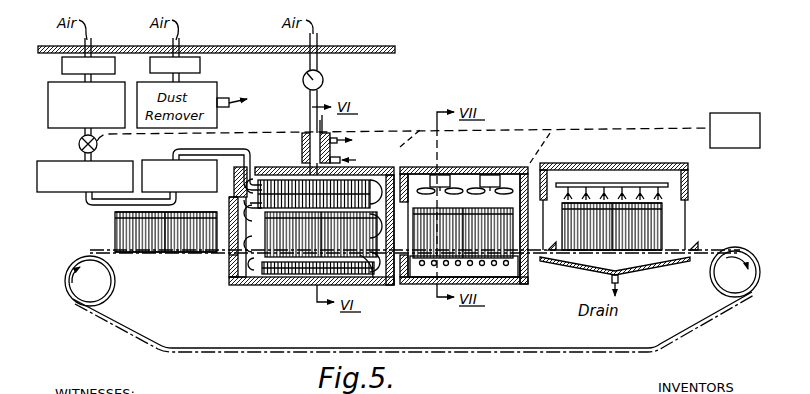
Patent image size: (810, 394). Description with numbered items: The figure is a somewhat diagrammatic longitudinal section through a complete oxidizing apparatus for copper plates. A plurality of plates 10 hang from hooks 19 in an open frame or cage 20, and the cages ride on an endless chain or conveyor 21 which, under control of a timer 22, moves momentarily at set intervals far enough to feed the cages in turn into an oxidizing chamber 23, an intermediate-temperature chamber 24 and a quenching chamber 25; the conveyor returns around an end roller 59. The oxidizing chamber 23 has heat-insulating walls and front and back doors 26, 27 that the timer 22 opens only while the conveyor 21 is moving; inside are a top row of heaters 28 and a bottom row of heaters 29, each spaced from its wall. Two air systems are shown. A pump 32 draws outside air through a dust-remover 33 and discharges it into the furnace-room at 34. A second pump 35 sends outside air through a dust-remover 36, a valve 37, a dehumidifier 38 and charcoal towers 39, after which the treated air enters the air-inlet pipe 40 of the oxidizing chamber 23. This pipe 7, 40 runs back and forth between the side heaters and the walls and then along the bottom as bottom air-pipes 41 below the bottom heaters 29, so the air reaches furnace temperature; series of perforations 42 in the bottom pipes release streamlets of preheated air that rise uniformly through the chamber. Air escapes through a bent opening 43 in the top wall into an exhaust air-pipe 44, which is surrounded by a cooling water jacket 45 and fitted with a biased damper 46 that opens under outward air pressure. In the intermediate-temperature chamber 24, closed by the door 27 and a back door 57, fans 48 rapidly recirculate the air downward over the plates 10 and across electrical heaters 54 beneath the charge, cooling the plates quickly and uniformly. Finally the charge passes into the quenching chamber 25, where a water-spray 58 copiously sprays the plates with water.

The air supply pipe to chamber 7 is at (247, 150).
The plates 10 is at (125, 232).
The hooks 19 is at (115, 216).
The cage 20 is at (110, 247).
The conveyor 21 is at (140, 257).
The timer 22 is at (740, 113).
The oxidizing chamber 23 is at (256, 172).
The intermediate-temperature chamber 24 is at (440, 195).
The quenching chamber 25 is at (614, 163).
The front door 26 is at (228, 258).
The back door 27 is at (398, 256).
The top row of heaters 28 is at (232, 205).
The bottom row of heaters 29 is at (237, 278).
The pump 32 is at (200, 66).
The dust-remover 33 is at (223, 98).
The furnace-room discharge 34 is at (238, 100).
The pump 35 is at (62, 65).
The dust-remover 36 is at (48, 110).
The valve 37 is at (79, 144).
The dehumidifier 38 is at (60, 193).
The charcoal towers 39 is at (160, 161).
The air-inlet pipe 40 is at (254, 163).
The bottom air-pipes 41 is at (373, 278).
The perforations 42 is at (295, 274).
The bent opening 43 is at (302, 145).
The exhaust air-pipe 44 is at (320, 95).
The water jacket 45 is at (330, 133).
The damper 46 is at (323, 75).
The fan 48 is at (457, 188).
The electrical heaters 54 is at (499, 266).
The back door 57 is at (525, 268).
The water-spray 58 is at (661, 196).
The conveyor roller 59 is at (782, 253).